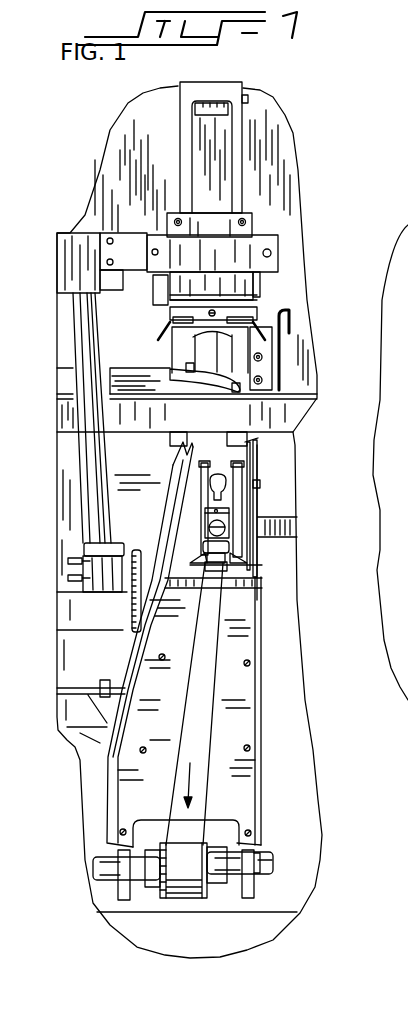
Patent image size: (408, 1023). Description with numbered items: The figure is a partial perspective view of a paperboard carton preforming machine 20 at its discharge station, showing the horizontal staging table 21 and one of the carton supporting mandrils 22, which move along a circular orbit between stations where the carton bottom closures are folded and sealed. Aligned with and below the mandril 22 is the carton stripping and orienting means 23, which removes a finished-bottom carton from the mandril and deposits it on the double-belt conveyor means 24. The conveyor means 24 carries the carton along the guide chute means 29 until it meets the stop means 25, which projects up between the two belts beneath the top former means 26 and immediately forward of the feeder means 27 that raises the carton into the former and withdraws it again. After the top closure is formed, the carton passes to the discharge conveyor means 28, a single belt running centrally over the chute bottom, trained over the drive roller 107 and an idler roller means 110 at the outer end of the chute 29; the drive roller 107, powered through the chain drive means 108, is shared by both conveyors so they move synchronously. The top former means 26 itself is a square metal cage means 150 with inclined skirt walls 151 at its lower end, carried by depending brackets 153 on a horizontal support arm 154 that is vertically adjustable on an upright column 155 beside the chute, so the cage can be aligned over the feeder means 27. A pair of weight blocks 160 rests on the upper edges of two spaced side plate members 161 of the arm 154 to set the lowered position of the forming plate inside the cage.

The carton preforming machine 20 is at (297, 180).
The horizontal staging table 21 is at (289, 526).
The carton supporting mandril 22 is at (243, 158).
The carton stripping and orienting means 23 is at (218, 478).
The double-belt conveyor means 24 is at (242, 502).
The stop means 25 is at (207, 513).
The top former means 26 is at (253, 318).
The feeder means 27 is at (236, 524).
The discharge conveyor means 28 is at (200, 749).
The guide chute means 29 is at (258, 660).
The drive roller 107 is at (228, 566).
The power driven chain drive means 108 is at (129, 618).
The idler roller means 110 is at (270, 860).
The cage means 150 is at (180, 313).
The skirt wall 151 is at (168, 325).
The depending bracket 153 is at (170, 283).
The horizontal support arm 154 is at (107, 233).
The upright column 155 is at (83, 312).
The weight block 160 is at (245, 232).
The side plate member 161 is at (272, 250).